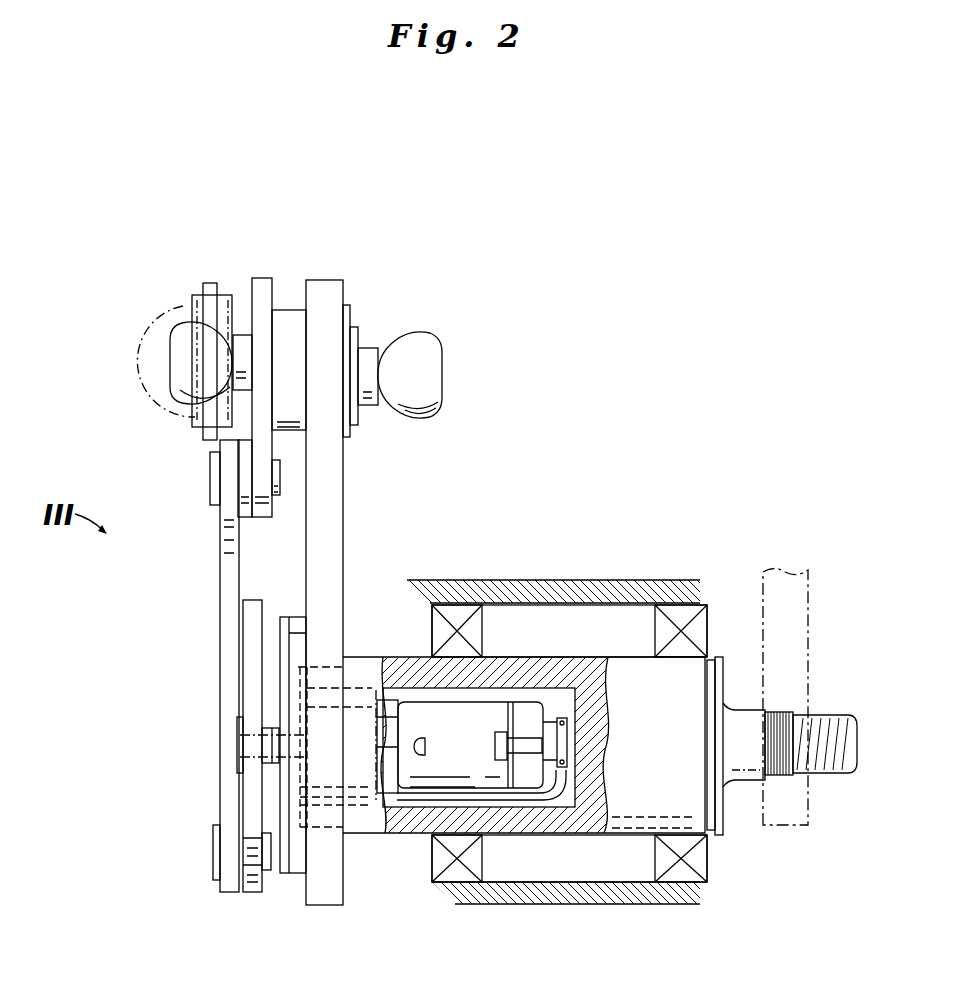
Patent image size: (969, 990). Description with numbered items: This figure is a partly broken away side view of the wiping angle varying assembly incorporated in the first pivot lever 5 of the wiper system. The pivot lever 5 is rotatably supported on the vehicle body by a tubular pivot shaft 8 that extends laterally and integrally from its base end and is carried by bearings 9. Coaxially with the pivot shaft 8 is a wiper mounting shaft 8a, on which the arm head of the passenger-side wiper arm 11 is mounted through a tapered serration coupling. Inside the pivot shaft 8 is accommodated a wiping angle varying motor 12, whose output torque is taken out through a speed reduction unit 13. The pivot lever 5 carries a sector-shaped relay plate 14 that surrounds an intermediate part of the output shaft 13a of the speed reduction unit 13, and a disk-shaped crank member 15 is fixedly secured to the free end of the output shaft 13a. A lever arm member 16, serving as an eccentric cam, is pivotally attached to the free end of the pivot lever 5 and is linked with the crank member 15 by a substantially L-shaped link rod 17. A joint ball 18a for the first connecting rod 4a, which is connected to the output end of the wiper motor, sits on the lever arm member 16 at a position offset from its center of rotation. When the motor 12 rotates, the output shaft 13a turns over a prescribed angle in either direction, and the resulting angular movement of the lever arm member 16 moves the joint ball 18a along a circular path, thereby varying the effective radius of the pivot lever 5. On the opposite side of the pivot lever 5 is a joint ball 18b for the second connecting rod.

The first connecting rod 4a is at (210, 280).
The lever arm member 16 is at (262, 278).
The joint ball 18a is at (171, 355).
The joint ball 18b is at (443, 365).
The first pivot lever 5 is at (343, 510).
The link rod 17 is at (220, 575).
The relay plate 14 is at (289, 633).
The speed reduction unit 13 is at (352, 703).
The output shaft 13a is at (237, 748).
The crank member 15 is at (252, 892).
The wiping angle varying motor 12 is at (500, 702).
The pivot shaft 8 is at (610, 656).
The bearings 9 is at (720, 616).
The wiper mounting shaft 8a is at (750, 783).
The wiper arm 11 is at (810, 592).